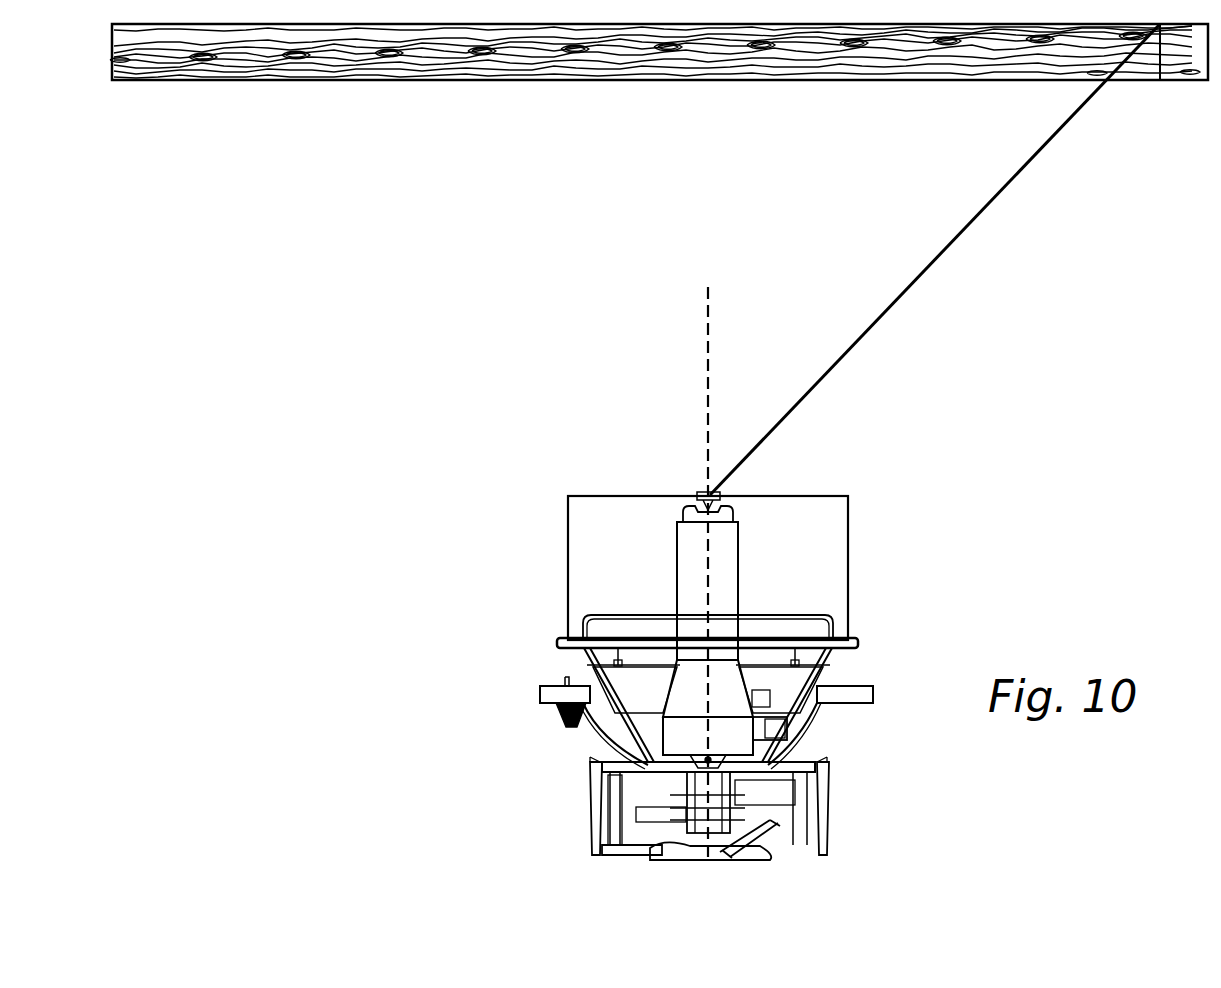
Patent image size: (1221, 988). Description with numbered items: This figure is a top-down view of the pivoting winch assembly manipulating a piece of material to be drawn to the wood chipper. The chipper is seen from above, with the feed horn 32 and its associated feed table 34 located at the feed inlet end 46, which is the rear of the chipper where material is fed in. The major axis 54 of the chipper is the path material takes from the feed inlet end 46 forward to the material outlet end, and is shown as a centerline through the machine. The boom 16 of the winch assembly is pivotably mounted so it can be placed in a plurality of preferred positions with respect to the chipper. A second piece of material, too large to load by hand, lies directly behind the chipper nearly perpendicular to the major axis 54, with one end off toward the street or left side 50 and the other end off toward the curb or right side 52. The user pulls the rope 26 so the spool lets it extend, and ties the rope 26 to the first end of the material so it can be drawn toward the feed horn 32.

The boom 16 is at (670, 677).
The rope 26 is at (988, 240).
The feed horn 32 is at (868, 660).
The feed table 34 is at (708, 568).
The feed inlet end 46 is at (565, 440).
The left side 50 is at (893, 763).
The right side 52 is at (518, 762).
The major axis 54 is at (710, 332).